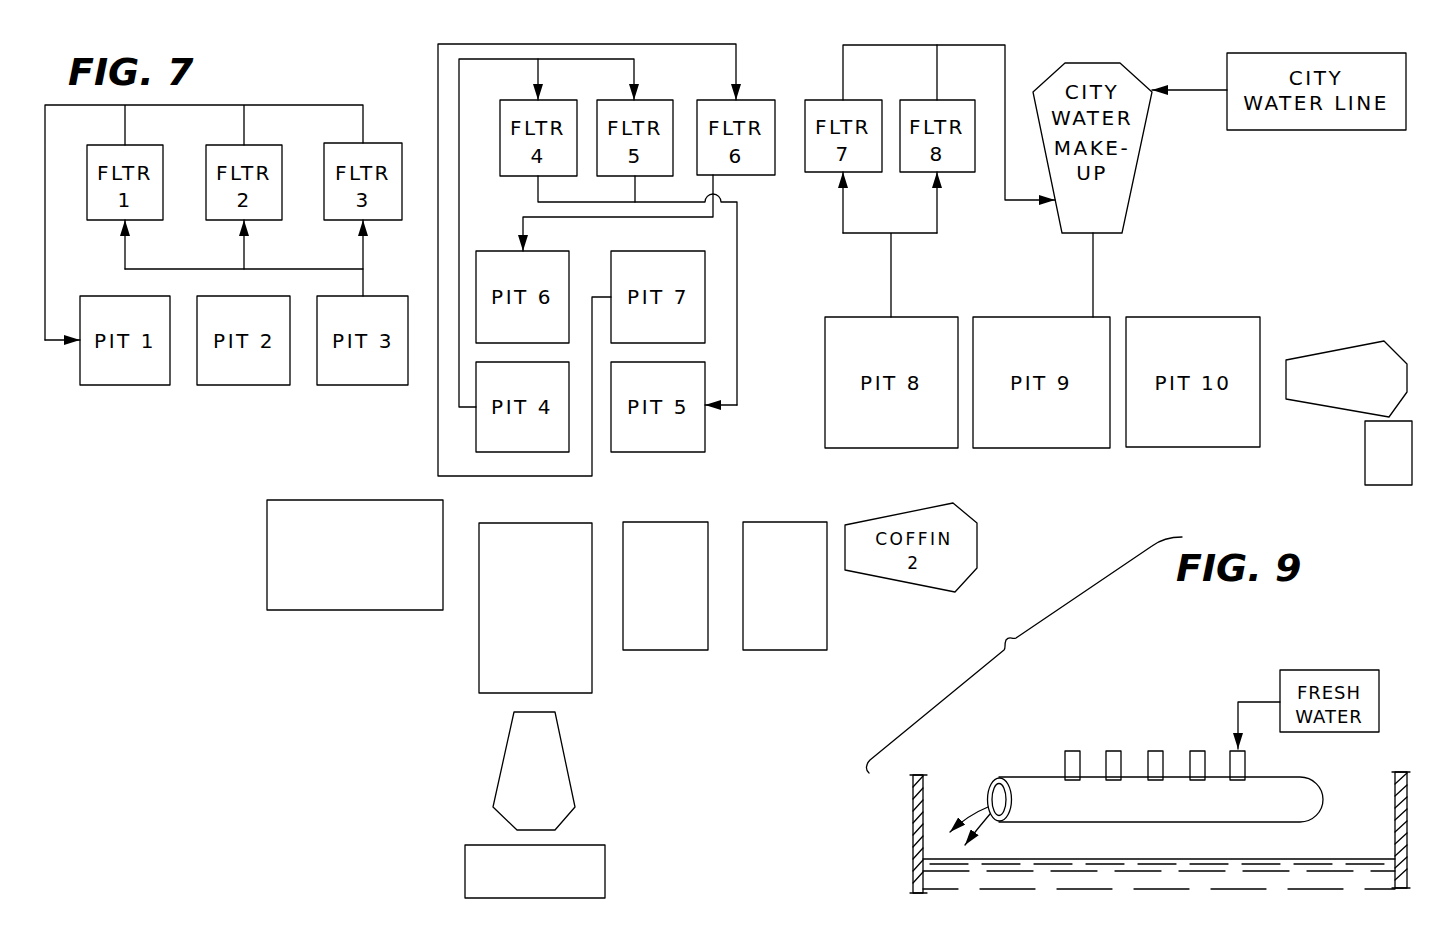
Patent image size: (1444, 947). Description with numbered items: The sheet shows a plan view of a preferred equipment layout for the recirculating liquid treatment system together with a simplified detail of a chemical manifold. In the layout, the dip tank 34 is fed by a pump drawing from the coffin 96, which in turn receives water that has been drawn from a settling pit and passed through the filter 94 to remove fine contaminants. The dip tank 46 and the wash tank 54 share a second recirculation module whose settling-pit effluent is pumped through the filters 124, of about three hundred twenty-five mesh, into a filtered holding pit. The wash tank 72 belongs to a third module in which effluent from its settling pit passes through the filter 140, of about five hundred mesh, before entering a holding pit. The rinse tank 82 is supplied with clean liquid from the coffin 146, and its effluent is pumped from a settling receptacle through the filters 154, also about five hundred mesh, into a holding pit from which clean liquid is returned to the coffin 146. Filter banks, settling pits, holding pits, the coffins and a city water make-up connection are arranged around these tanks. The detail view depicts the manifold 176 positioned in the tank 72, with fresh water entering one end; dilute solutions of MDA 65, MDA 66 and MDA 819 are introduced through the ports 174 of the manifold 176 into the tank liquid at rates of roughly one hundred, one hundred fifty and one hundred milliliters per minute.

In FIG. 7, the filters 154 is at (206, 197).
In FIG. 7, the filters 124 is at (613, 102).
In FIG. 7, the filter 140 is at (716, 102).
In FIG. 7, the coffin 96 is at (1346, 379).
In FIG. 7, the filter 94 is at (1368, 467).
In FIG. 7, the rinse tank 82 is at (355, 555).
In FIG. 7, the wash tank 54 is at (535, 608).
In FIG. 7, the dip tank 46 is at (665, 586).
In FIG. 7, the wash tank 72 is at (785, 586).
In FIG. 9, the wash tank 72 is at (912, 810).
In FIG. 7, the coffin 146 is at (534, 771).
In FIG. 7, the dip tank 34 is at (535, 871).
In FIG. 9, the dilute MDA solution 65 is at (1113, 741).
In FIG. 9, the dilute MDA solution 819 is at (1155, 739).
In FIG. 9, the dilute MDA solution 66 is at (1198, 739).
In FIG. 9, the manifold 176 is at (1292, 785).
In FIG. 9, the ports 174 is at (1107, 774).